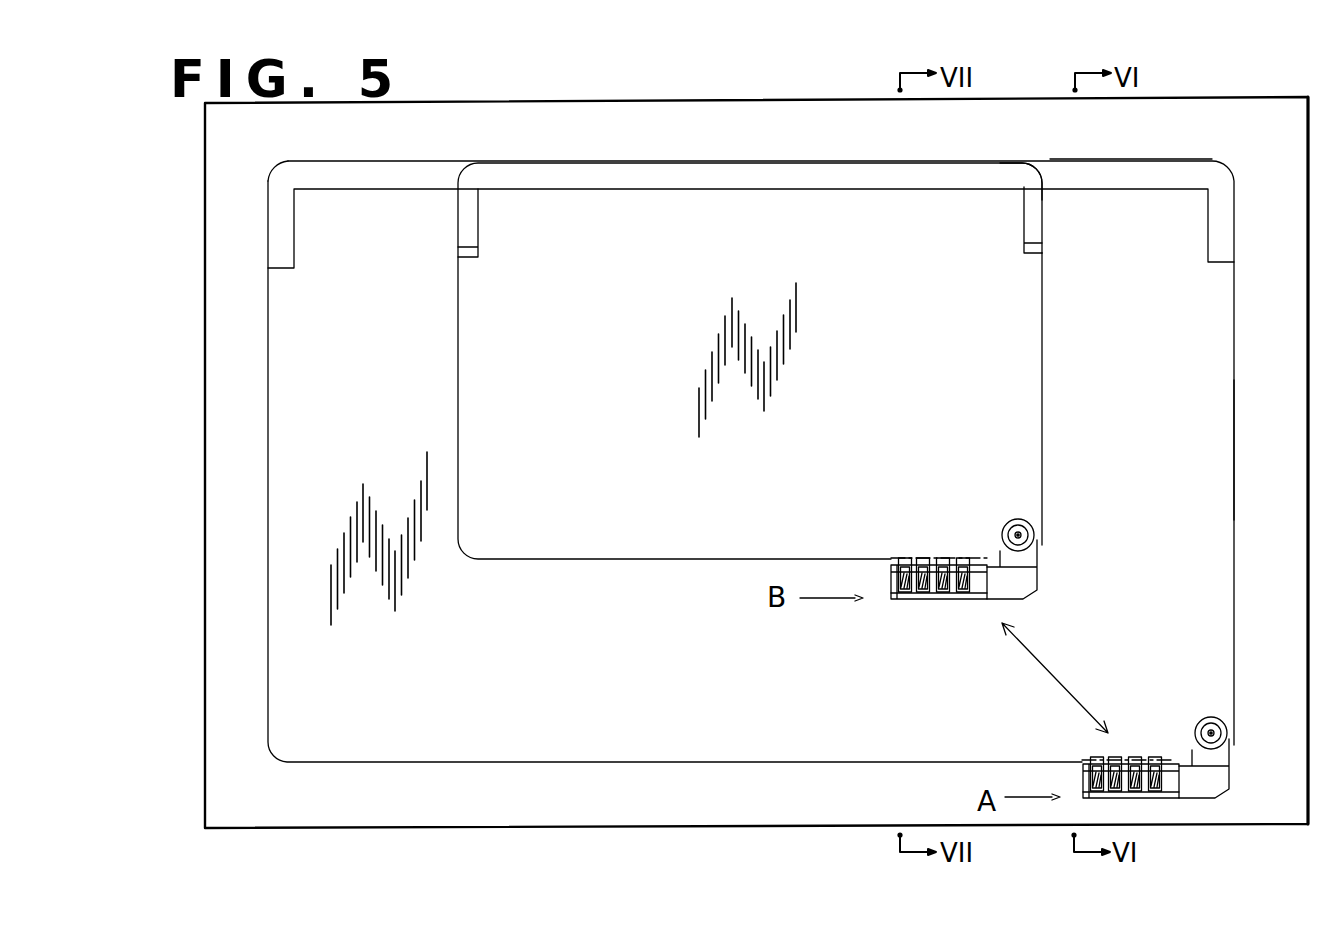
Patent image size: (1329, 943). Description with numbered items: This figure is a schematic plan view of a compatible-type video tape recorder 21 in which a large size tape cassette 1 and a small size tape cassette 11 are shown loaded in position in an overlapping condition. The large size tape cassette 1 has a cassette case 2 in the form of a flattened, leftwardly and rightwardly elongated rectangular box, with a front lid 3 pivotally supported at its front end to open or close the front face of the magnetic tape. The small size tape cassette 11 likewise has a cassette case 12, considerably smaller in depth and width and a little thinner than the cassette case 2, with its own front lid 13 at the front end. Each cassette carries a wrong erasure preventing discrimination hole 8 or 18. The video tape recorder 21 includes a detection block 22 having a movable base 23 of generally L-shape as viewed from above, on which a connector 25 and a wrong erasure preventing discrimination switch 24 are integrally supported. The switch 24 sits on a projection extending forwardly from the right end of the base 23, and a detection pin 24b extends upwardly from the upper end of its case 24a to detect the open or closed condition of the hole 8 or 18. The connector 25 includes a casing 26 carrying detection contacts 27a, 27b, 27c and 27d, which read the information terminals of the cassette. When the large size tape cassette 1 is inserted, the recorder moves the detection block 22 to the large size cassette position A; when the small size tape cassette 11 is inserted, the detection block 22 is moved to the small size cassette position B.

The large size tape cassette 1 is at (1233, 362).
The cassette case 2 is at (1233, 415).
The front lid 3 is at (1187, 160).
The wrong erasure preventing discrimination hole 8 is at (1206, 718).
The small size tape cassette 11 is at (1043, 362).
The cassette case 12 is at (1043, 378).
The front lid 13 is at (1042, 166).
The wrong erasure preventing discrimination hole 18 is at (1019, 520).
The video tape recorder 21 is at (1240, 97).
The detection block 22 is at (1064, 646).
The movable base 23 is at (1030, 600).
The wrong erasure preventing discrimination switch 24 is at (1116, 584).
The case 24a is at (1035, 543).
The detection pin 24b is at (1013, 528).
The connector 25 is at (896, 600).
The casing 26 is at (978, 600).
The detection contact 27a is at (963, 559).
The detection contact 27b is at (943, 559).
The detection contact 27c is at (922, 559).
The detection contact 27d is at (905, 560).